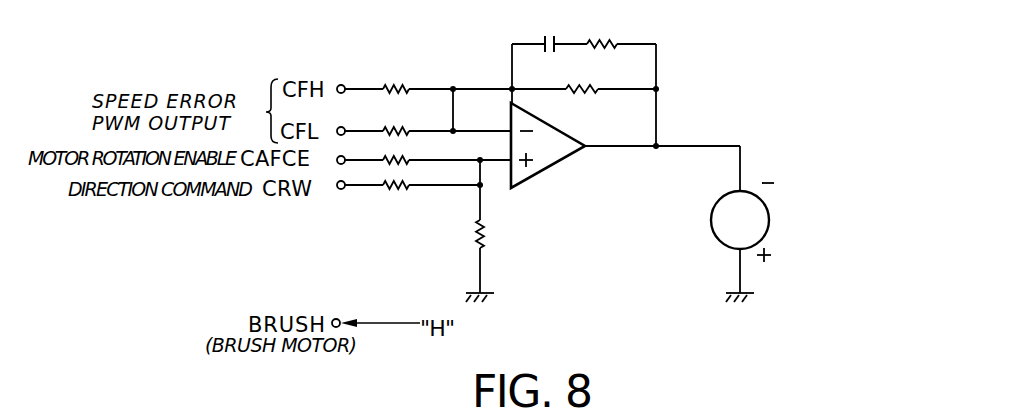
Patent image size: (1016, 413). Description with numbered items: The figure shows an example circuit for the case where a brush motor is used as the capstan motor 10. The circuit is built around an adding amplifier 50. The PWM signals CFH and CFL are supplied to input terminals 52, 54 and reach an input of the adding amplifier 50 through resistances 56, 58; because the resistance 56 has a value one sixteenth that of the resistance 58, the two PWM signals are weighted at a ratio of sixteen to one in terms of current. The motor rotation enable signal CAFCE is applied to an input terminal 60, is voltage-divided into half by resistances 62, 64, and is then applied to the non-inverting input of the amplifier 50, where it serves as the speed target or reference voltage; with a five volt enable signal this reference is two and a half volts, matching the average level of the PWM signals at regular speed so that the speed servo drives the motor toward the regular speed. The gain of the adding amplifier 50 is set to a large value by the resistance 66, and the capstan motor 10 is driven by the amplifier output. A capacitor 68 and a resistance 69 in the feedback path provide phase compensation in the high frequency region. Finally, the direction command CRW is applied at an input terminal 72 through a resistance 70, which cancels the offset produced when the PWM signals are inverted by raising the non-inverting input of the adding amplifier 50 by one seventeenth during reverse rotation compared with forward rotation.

The capstan motor 10 is at (769, 220).
The adding amplifier 50 is at (553, 167).
The input terminal 52 is at (349, 72).
The input terminal 54 is at (349, 115).
The resistance 56 is at (410, 89).
The resistance 58 is at (410, 131).
The input terminal 60 is at (343, 156).
The resistance 62 is at (409, 161).
The resistance 64 is at (467, 242).
The resistance 66 is at (589, 92).
The capacitor 68 is at (553, 42).
The resistance 69 is at (605, 42).
The resistance 70 is at (410, 189).
The input terminal 72 is at (341, 190).